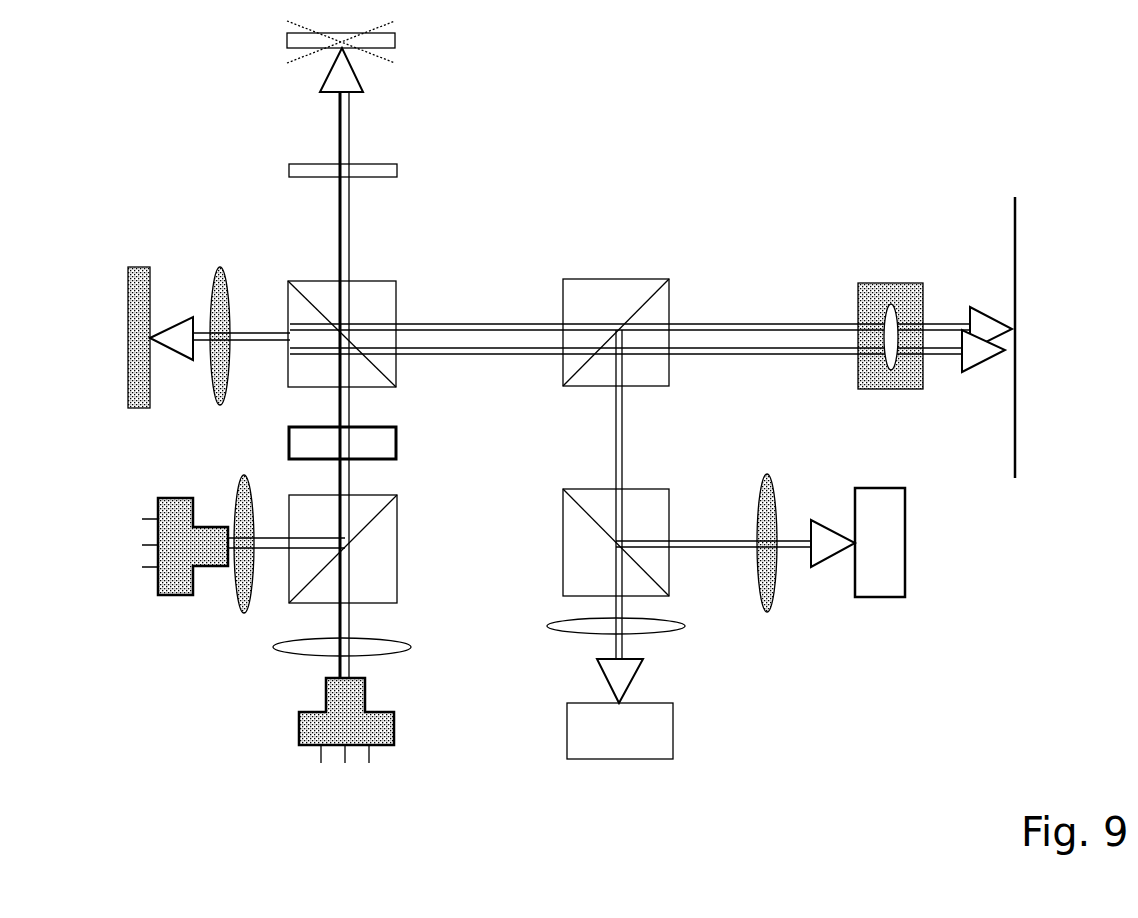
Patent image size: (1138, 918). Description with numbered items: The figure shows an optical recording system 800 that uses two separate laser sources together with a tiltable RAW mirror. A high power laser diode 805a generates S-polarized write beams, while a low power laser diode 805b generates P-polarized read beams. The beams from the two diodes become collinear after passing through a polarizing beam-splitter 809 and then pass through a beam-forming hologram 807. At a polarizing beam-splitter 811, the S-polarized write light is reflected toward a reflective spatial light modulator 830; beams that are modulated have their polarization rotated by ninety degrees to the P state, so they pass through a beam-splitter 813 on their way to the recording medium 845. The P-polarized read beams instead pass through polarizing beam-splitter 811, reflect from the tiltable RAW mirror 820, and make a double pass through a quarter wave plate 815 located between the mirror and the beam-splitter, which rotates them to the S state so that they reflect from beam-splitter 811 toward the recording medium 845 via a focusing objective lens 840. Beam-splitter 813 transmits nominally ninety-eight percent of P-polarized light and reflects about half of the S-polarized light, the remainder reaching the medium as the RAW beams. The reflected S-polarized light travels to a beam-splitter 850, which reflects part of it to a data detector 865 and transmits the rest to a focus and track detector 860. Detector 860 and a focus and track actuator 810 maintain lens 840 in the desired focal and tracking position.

The optical recording system 800 is at (846, 78).
The high power laser diode 805a is at (178, 595).
The low power laser diode 805b is at (310, 745).
The beam-forming hologram 807 is at (289, 444).
The polarizing beam-splitter 809 is at (397, 585).
The focus and track actuator 810 is at (885, 283).
The polarizing beam-splitter 811 is at (288, 281).
The beam-splitter 813 is at (615, 279).
The quarter wave plate 815 is at (289, 168).
The tiltable RAW mirror 820 is at (287, 43).
The reflective spatial light modulator 830 is at (128, 323).
The focusing objective lens 840 is at (886, 315).
The recording medium 845 is at (1015, 197).
The beam-splitter 850 is at (669, 583).
The focus and track detector 860 is at (673, 748).
The data detector 865 is at (905, 556).